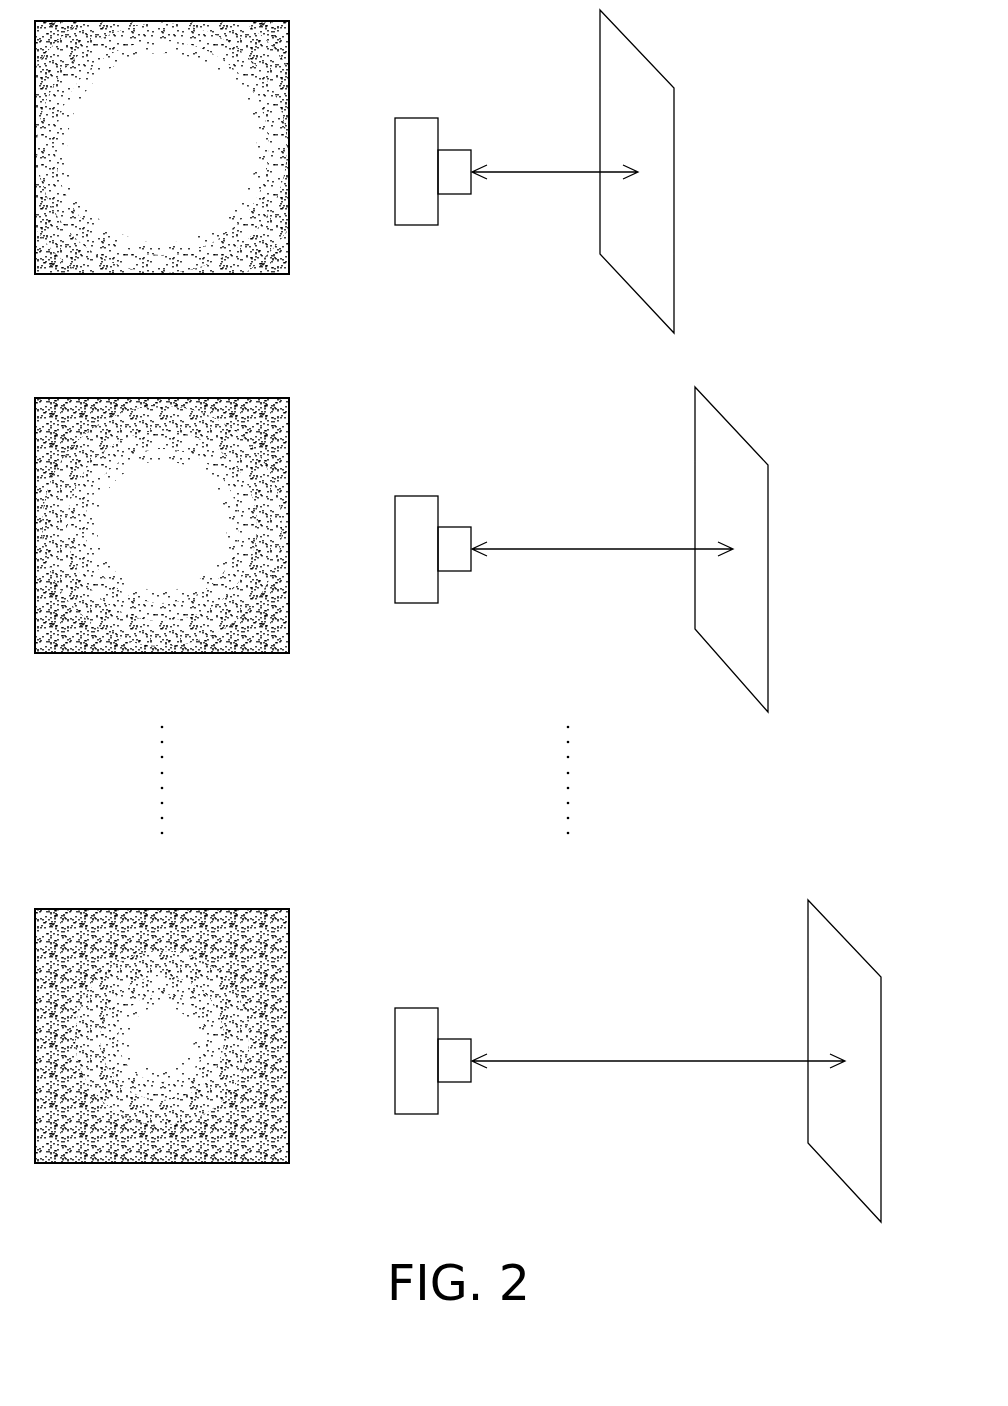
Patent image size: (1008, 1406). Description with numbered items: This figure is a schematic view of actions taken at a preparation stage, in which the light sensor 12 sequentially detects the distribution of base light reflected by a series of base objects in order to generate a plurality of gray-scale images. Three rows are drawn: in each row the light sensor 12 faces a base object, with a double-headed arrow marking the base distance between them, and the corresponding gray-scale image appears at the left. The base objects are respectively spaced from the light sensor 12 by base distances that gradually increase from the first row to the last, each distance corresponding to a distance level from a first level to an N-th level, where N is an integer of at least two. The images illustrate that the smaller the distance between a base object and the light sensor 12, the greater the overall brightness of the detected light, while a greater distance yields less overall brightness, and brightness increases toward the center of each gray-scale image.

The light sensor 12 is at (421, 118).